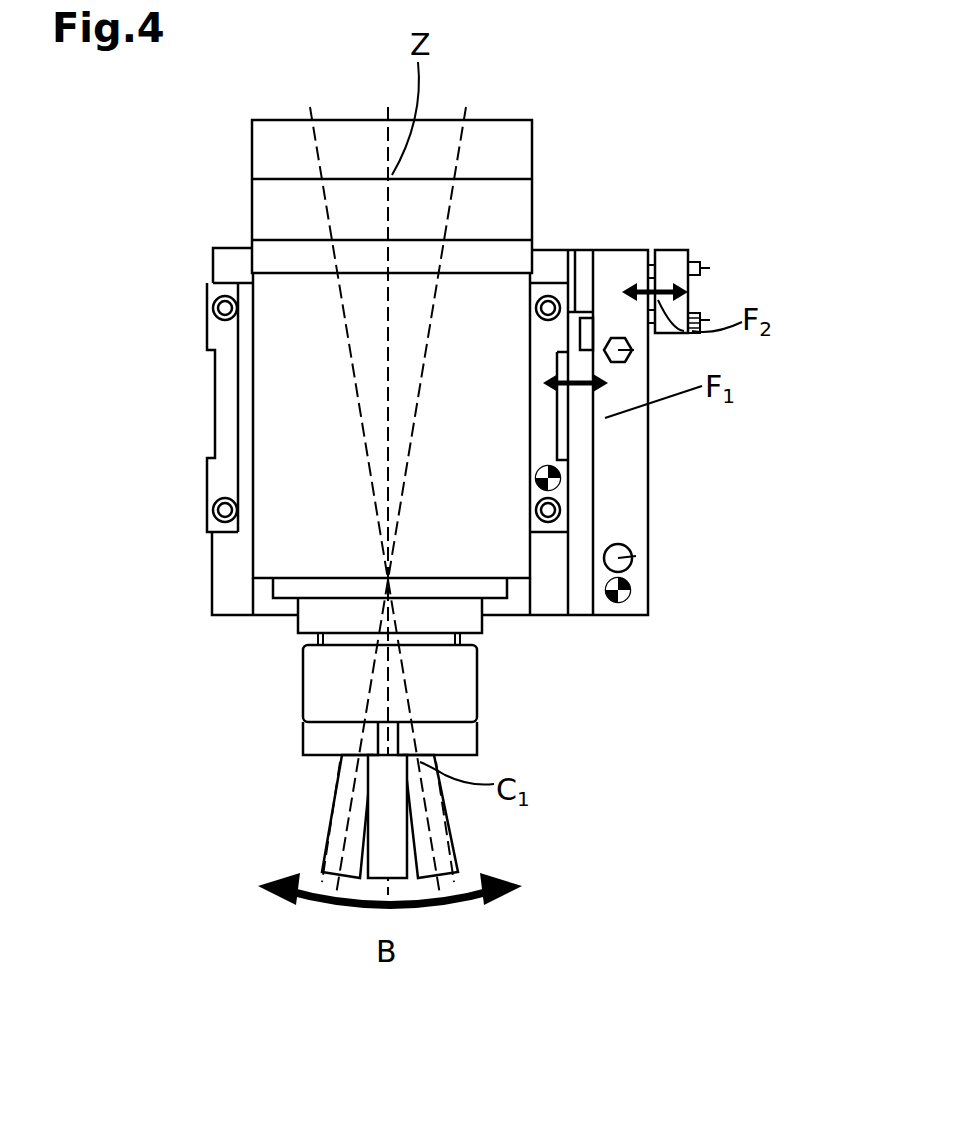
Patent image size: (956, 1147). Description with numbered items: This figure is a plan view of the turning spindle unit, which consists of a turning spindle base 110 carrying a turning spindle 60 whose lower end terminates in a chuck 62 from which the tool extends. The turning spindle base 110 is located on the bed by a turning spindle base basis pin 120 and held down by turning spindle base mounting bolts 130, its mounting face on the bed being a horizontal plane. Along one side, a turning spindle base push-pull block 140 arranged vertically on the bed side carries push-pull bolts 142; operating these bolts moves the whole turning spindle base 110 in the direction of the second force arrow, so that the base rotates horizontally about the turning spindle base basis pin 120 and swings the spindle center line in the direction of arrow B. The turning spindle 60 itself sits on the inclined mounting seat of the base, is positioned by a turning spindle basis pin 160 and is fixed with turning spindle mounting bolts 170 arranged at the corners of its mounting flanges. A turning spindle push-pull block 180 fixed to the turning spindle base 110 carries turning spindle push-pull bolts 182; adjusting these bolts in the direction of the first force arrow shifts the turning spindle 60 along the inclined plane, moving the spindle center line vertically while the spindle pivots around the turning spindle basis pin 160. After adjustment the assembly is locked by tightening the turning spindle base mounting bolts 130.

The turning spindle 60 is at (300, 406).
The chuck 62 is at (320, 668).
The turning spindle base 110 is at (628, 420).
The turning spindle base basis pin 120 is at (630, 590).
The turning spindle base mounting bolts 130 is at (634, 350).
The turning spindle base push-pull block 140 is at (672, 265).
The push-pull bolts 142 is at (702, 320).
The turning spindle basis pin 160 is at (560, 478).
The turning spindle mounting bolts 170 is at (221, 306).
The turning spindle push-pull block 180 is at (582, 300).
The turning spindle push-pull bolts 182 is at (612, 316).